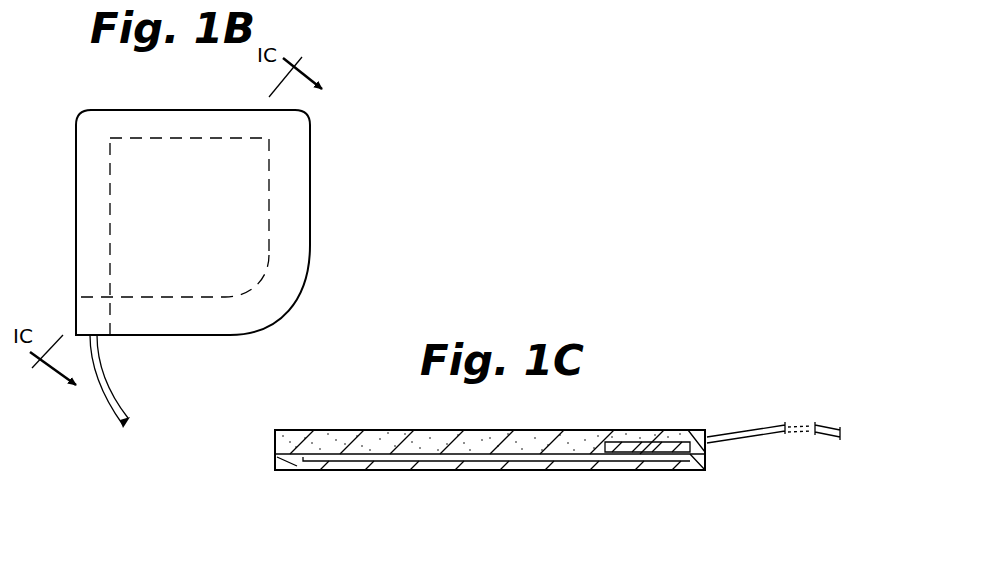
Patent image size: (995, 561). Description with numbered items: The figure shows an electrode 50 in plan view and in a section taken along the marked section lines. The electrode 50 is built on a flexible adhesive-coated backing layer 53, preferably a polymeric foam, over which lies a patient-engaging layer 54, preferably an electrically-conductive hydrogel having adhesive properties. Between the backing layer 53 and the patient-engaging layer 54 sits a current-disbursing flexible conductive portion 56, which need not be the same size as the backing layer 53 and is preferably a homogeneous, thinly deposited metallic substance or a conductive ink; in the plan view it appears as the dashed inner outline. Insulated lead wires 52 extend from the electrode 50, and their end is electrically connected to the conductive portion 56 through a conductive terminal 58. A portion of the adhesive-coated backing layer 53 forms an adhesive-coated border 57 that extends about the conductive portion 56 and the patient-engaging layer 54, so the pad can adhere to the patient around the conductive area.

In FIG. 1B, the electrode 50 is at (236, 100).
In FIG. 1C, the electrode 50 is at (330, 420).
In FIG. 1B, the insulated lead wires 52 is at (112, 388).
In FIG. 1C, the insulated lead wires 52 is at (748, 425).
In FIG. 1B, the adhesive-coated backing layer 53 is at (303, 240).
In FIG. 1C, the adhesive-coated backing layer 53 is at (462, 430).
In FIG. 1C, the patient-engaging layer 54 is at (296, 478).
In FIG. 1B, the conductive portion 56 is at (147, 137).
In FIG. 1C, the conductive portion 56 is at (448, 470).
In FIG. 1B, the adhesive-coated border 57 is at (297, 192).
In FIG. 1C, the adhesive-coated border 57 is at (285, 471).
In FIG. 1B, the conductive terminal 58 is at (85, 315).
In FIG. 1C, the conductive terminal 58 is at (645, 428).